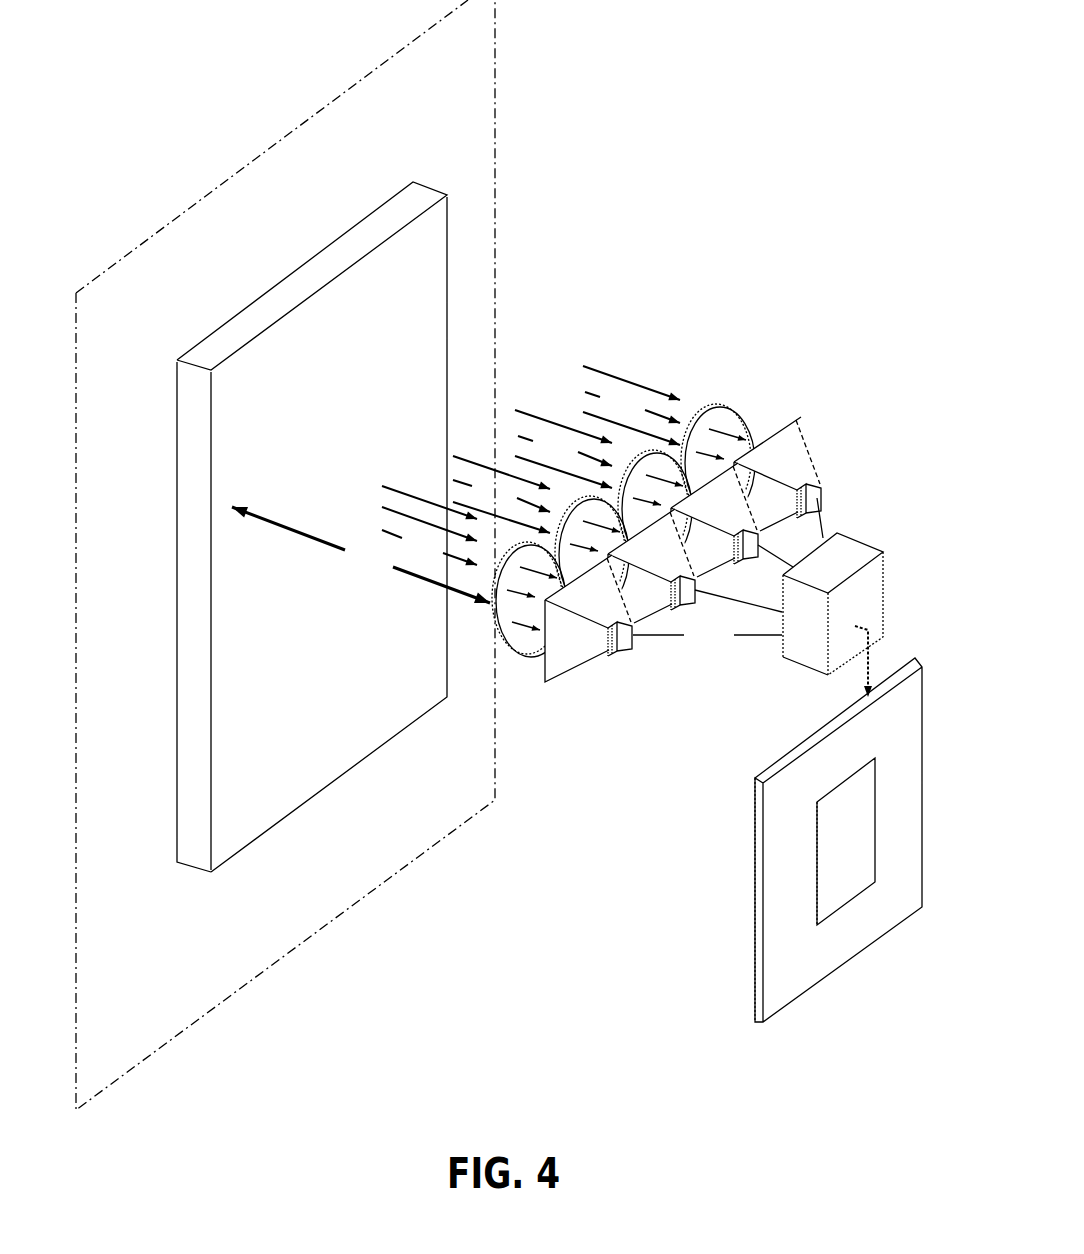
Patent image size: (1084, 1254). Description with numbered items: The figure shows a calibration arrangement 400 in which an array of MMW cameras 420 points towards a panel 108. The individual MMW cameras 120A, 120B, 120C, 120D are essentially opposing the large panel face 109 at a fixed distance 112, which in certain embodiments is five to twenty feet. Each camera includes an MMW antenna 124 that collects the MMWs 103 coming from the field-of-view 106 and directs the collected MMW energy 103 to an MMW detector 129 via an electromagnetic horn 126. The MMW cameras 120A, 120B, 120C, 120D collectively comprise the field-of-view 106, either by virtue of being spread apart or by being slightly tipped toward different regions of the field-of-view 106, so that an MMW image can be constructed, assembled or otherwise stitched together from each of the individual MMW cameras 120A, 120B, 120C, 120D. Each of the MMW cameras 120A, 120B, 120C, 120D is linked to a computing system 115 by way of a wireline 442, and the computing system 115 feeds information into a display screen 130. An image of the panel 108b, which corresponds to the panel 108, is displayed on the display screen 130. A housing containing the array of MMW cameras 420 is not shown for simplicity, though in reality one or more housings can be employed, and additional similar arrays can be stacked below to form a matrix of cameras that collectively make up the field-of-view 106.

The calibration arrangement 400 is at (652, 40).
The field-of-view 106 is at (245, 172).
The panel 108 is at (177, 440).
The large panel face 109 is at (410, 341).
The fixed distance 112 is at (361, 555).
The MMWs 103 is at (531, 467).
The array of MMW cameras 420 is at (835, 360).
The MMW camera 120A is at (652, 679).
The MMW camera 120B is at (692, 548).
The MMW camera 120C is at (775, 535).
The MMW camera 120D is at (820, 440).
The wireline 442 is at (728, 574).
The computing system 115 is at (817, 672).
The MMW detector 129 is at (625, 650).
The electromagnetic horn 126 is at (578, 667).
The MMW antenna 124 is at (513, 652).
The display screen 130 is at (792, 840).
The image of the panel 108b is at (850, 898).